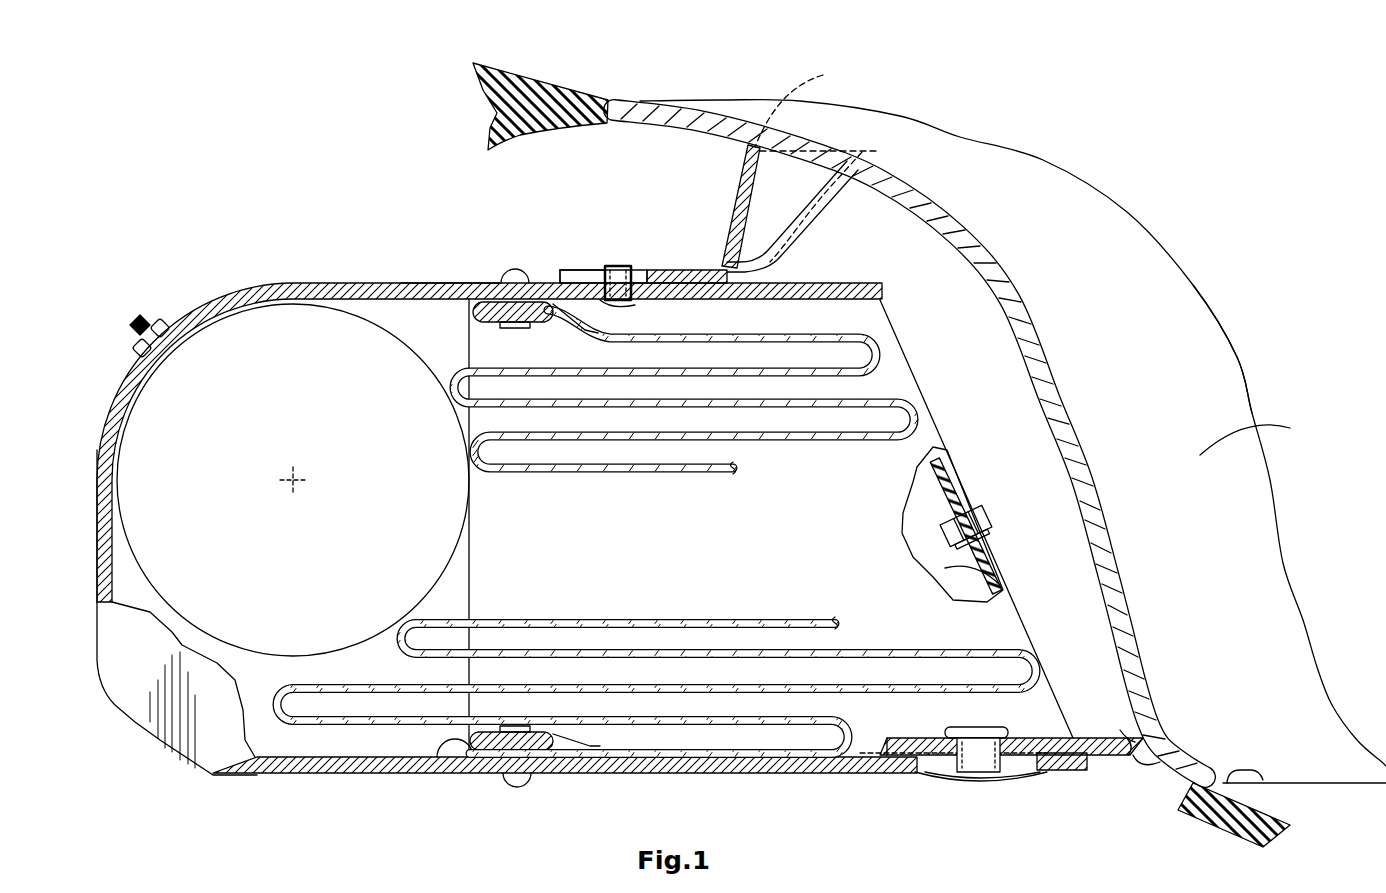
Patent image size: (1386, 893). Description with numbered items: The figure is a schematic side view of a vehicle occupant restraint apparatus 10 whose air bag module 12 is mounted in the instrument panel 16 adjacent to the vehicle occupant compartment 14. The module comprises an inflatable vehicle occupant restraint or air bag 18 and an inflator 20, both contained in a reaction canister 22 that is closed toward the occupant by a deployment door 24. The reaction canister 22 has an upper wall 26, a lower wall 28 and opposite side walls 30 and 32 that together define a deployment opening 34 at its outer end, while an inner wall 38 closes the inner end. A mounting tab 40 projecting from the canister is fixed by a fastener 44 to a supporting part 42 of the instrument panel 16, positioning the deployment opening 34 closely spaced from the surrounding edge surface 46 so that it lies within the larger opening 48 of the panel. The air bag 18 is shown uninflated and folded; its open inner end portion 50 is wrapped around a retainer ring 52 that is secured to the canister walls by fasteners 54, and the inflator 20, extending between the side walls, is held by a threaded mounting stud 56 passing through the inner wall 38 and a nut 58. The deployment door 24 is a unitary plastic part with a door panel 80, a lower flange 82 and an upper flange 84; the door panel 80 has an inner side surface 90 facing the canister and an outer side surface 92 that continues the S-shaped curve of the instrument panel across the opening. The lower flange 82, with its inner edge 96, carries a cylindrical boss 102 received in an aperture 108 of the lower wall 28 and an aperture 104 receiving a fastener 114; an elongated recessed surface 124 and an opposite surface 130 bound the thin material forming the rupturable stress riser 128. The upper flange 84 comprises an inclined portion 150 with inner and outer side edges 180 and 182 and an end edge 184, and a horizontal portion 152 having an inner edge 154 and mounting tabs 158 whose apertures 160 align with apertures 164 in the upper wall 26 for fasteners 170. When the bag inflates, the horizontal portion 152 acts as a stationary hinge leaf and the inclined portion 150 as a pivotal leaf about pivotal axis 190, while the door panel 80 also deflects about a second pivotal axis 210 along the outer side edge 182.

The vehicle occupant restraint apparatus 10 is at (1058, 128).
The air bag module 12 is at (300, 248).
The vehicle occupant compartment 14 is at (1231, 247).
The instrument panel 16 is at (553, 72).
The inflatable vehicle occupant restraint 18 is at (428, 345).
The inflator 20 is at (290, 327).
The reaction canister 22 is at (108, 382).
The deployment door 24 is at (1244, 352).
The upper wall 26 is at (447, 296).
The lower wall 28 is at (680, 772).
The side wall 30 is at (130, 588).
The side wall 32 is at (135, 670).
The deployment opening 34 is at (925, 360).
The inner wall 38 is at (97, 447).
The mounting tab 40 is at (965, 496).
The supporting part 42 is at (935, 500).
The fastener 44 is at (1000, 515).
The edge surface 46 is at (1250, 770).
The opening 48 is at (644, 94).
The inner end portion 50 is at (470, 742).
The retainer ring 52 is at (480, 762).
The fastener 54 is at (515, 274).
The mounting stud 56 is at (133, 323).
The nut 58 is at (160, 320).
The door panel 80 is at (1232, 395).
The lower flange 82 is at (1068, 767).
The upper flange 84 is at (810, 240).
The inner side surface 90 is at (1045, 405).
The outer side surface 92 is at (1257, 436).
The inner edge 96 is at (872, 752).
The cylindrical boss 102 is at (902, 760).
The aperture 104 is at (975, 727).
The aperture 108 is at (1013, 783).
The fastener 114 is at (945, 767).
The recessed surface 124 is at (1152, 756).
The stress riser 128 is at (1125, 738).
The opposite surface 130 is at (1130, 730).
The inclined portion 150 is at (750, 180).
The horizontal portion 152 is at (588, 272).
The inner edge 154 is at (578, 272).
The mounting tab 158 is at (592, 272).
The aperture 160 is at (611, 262).
The aperture 164 is at (636, 306).
The fastener 170 is at (612, 315).
The inner side edge 180 is at (720, 268).
The outer side edge 182 is at (746, 148).
The end edge 184 is at (843, 193).
The pivotal axis 190 is at (727, 302).
The second pivotal axis 210 is at (824, 76).